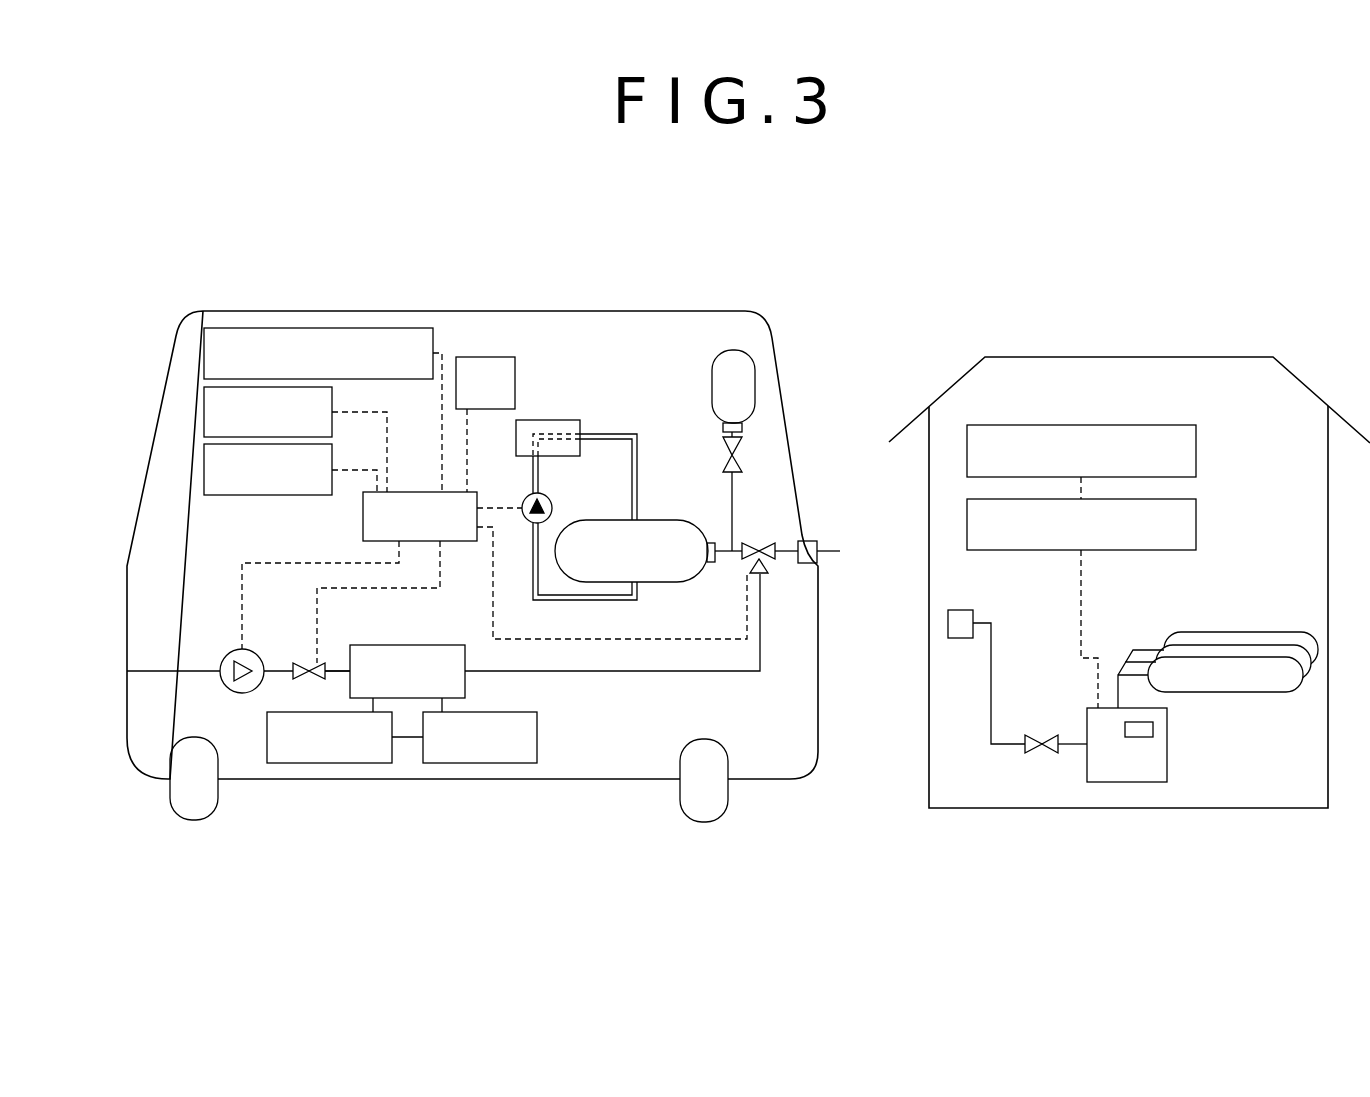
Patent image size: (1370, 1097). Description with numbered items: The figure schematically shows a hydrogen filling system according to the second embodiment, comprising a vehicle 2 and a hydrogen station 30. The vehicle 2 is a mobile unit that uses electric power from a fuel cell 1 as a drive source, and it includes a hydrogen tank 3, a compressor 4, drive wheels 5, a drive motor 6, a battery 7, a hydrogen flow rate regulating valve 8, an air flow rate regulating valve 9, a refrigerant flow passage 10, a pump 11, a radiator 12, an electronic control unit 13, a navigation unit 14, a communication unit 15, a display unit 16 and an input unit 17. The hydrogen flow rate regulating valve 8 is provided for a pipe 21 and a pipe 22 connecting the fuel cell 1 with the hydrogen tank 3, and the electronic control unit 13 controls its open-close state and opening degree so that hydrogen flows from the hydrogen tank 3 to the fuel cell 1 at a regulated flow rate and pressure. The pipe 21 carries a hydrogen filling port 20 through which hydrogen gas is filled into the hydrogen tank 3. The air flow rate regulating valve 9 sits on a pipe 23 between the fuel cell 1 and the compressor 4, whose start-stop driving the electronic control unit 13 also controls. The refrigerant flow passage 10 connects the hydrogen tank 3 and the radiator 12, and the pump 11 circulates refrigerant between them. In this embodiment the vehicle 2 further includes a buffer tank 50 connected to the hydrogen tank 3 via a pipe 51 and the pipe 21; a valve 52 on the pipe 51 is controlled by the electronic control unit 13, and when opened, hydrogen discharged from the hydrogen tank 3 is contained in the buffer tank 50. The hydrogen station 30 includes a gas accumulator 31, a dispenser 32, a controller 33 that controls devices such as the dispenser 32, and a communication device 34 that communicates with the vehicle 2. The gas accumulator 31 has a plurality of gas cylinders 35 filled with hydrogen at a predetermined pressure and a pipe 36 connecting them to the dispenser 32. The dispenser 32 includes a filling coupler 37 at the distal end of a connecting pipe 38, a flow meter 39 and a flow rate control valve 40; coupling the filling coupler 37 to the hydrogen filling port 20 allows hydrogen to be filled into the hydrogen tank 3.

The fuel cell 1 is at (448, 645).
The vehicle 2 is at (716, 299).
The hydrogen tank 3 is at (650, 520).
The compressor 4 is at (226, 653).
The drive wheels 5 is at (210, 815).
The drive motor 6 is at (503, 763).
The battery 7 is at (310, 763).
The hydrogen flow rate regulating valve 8 is at (763, 543).
The air flow rate regulating valve 9 is at (303, 663).
The refrigerant flow passage 10 is at (608, 434).
The pump 11 is at (525, 496).
The radiator 12 is at (555, 420).
The electronic control unit 13 is at (363, 518).
The navigation unit 14 is at (495, 357).
The communication unit 15 is at (204, 353).
The display unit 16 is at (204, 410).
The input unit 17 is at (204, 470).
The hydrogen filling port 20 is at (839, 552).
The pipe 21 is at (719, 565).
The pipe 22 is at (743, 677).
The pipe 23 is at (335, 670).
The hydrogen station 30 is at (1193, 344).
The gas accumulator 31 is at (1256, 626).
The dispenser 32 is at (1167, 768).
The controller 33 is at (1196, 523).
The communication device 34 is at (1196, 449).
The gas cylinders 35 is at (1273, 693).
The pipe 36 is at (1135, 650).
The filling coupler 37 is at (960, 610).
The connecting pipe 38 is at (991, 698).
The flow meter 39 is at (1153, 728).
The flow rate control valve 40 is at (1047, 735).
The buffer tank 50 is at (712, 395).
The pipe 51 is at (730, 502).
The valve 52 is at (723, 448).